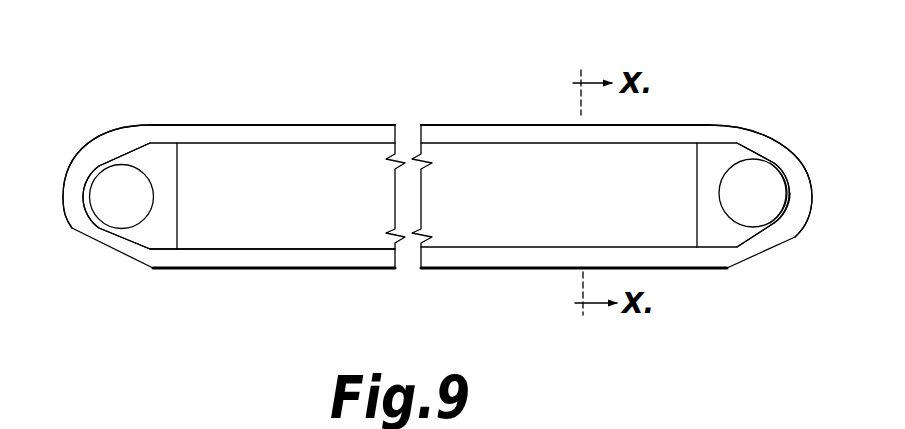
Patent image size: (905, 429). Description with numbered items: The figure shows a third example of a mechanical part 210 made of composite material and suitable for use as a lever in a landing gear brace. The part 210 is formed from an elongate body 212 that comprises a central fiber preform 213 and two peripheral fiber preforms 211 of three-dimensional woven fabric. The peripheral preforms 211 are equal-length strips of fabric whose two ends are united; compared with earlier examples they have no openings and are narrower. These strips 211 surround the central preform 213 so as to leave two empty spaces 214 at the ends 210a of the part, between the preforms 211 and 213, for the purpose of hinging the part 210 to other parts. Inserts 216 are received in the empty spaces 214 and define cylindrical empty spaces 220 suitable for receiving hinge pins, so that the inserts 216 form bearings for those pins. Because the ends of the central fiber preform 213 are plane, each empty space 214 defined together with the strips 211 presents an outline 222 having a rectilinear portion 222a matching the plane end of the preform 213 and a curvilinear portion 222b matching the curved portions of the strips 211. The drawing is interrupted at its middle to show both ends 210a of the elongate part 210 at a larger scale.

The mechanical part 210 is at (250, 98).
The ends 210a is at (72, 160).
The peripheral fiber preforms 211 is at (335, 126).
The elongate body 212 is at (313, 232).
The central fiber preform 213 is at (287, 198).
The empty spaces 214 is at (142, 143).
The inserts 216 is at (163, 235).
The cylindrical empty spaces 220 is at (107, 212).
The outline 222 is at (740, 148).
The rectilinear portion 222a is at (695, 158).
The curvilinear portion 222b is at (788, 213).